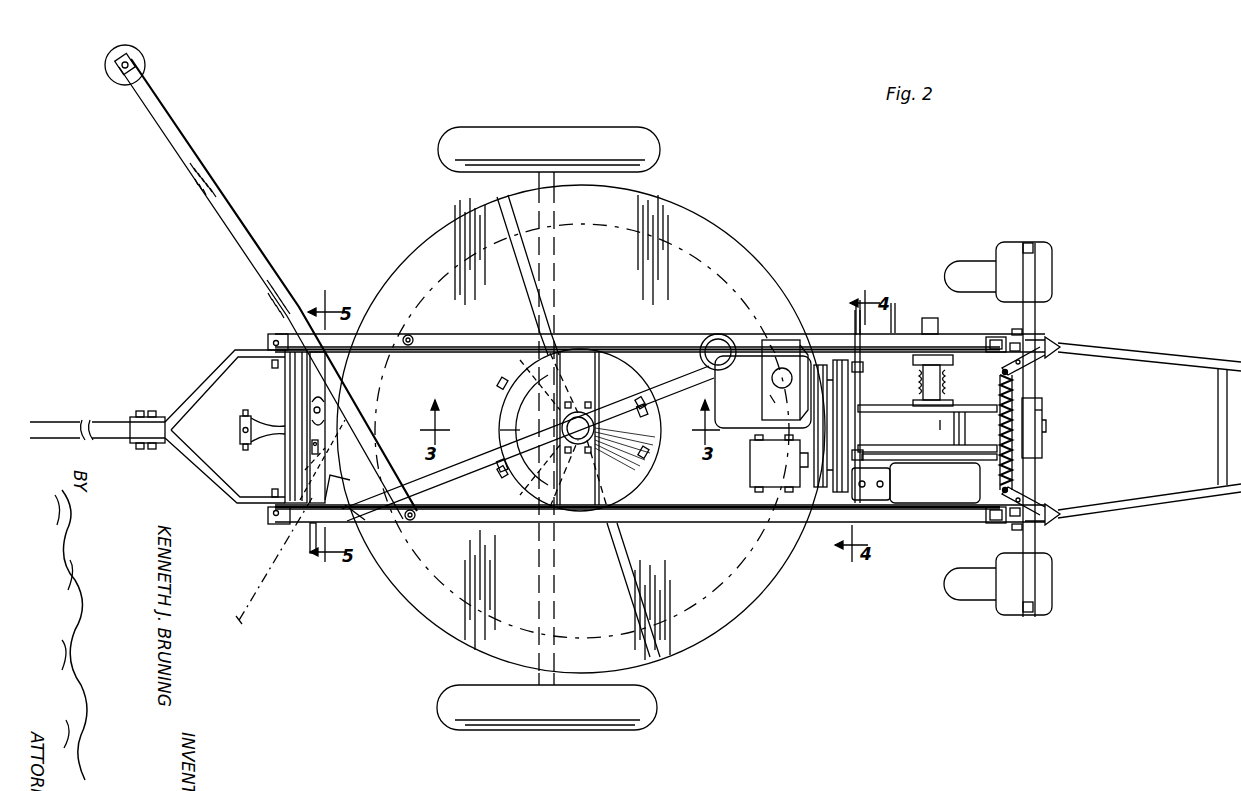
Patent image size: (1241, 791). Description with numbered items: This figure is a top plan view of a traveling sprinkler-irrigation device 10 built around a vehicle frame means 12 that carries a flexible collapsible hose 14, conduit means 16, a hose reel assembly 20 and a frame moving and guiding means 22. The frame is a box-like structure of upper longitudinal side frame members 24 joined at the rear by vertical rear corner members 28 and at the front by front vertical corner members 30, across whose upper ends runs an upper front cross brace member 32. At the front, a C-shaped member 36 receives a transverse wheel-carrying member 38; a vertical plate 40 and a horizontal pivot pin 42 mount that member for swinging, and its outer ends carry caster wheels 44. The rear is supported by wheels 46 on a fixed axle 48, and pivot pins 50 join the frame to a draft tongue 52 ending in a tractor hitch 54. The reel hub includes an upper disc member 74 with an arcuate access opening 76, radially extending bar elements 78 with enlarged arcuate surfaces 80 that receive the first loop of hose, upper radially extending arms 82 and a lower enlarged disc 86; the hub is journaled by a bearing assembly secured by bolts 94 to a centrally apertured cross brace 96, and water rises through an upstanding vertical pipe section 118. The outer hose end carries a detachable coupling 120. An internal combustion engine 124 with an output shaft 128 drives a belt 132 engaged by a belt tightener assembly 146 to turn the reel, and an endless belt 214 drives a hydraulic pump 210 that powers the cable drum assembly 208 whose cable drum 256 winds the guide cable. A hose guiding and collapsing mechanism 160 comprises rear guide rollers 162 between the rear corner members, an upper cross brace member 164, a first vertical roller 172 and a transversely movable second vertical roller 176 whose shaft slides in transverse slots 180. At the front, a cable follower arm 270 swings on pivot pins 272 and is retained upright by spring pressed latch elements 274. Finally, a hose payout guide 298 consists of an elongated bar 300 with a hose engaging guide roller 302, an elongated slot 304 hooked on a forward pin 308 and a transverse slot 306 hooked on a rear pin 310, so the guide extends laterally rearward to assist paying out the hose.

The traveling sprinkler-irrigation device 10 is at (802, 242).
The vehicle frame means 12 is at (813, 333).
The flexible collapsible hose 14 is at (272, 442).
The conduit means 16 is at (654, 438).
The hose reel assembly 20 is at (722, 223).
The frame moving and guiding means 22 is at (915, 513).
The upper longitudinally extending side frame members 24 is at (664, 336).
The vertically extending rear corner members 28 is at (354, 345).
The front vertical corner members 30 is at (983, 540).
The upper front cross brace member 32 is at (1036, 407).
The C-shaped member 36 is at (1046, 458).
The transversely extending wheel-carrying member 38 is at (1028, 393).
The vertical plate 40 is at (1046, 440).
The pivot pin 42 is at (1044, 423).
The caster wheels 44 is at (975, 240).
The wheels 46 is at (646, 150).
The fixed axle 48 is at (535, 677).
The pivot pins 50 is at (276, 364).
The draft tongue 52 is at (107, 420).
The tractor clevis or hitch 54 is at (48, 427).
The upper disc member 74 is at (590, 348).
The arcuate access opening 76 is at (508, 410).
The radially extending bar elements 78 is at (508, 385).
The enlarged arcuate surfaces 80 is at (490, 380).
The radially extending arms 82 is at (532, 292).
The enlarged disc 86 is at (440, 620).
The bolts 94 is at (635, 386).
The centrally apertured cross brace 96 is at (580, 522).
The upstanding vertical pipe section 118 is at (504, 437).
The detachable coupling 120 is at (237, 428).
The internal combustion engine 124 is at (745, 332).
The output shaft 128 is at (856, 310).
The belt 132 is at (846, 398).
The belt tightener assembly 146 is at (880, 342).
The hose guiding and collapsing mechanism 160 is at (363, 510).
The rear guide rollers 162 is at (293, 397).
The upper cross brace member 164 is at (330, 486).
The first vertical roller 172 is at (325, 405).
The second vertical roller 176 is at (348, 425).
The transverse slots 180 is at (316, 450).
The cable drum assembly 208 is at (950, 406).
The hydraulic pump 210 is at (765, 487).
The endless belt 214 is at (767, 412).
The cable drum 256 is at (934, 458).
The cable follower arm 270 is at (1092, 355).
The pivot pins 272 is at (1021, 328).
The spring pressed latch elements 274 is at (1051, 359).
The hose payout guide 298 is at (223, 188).
The elongated bar 300 is at (250, 237).
The hose engaging guide roller 302 is at (146, 62).
The elongated slot 304 is at (418, 337).
The transverse slot 306 is at (265, 316).
The pins 308 is at (410, 502).
The second pair of pins 310 is at (268, 522).